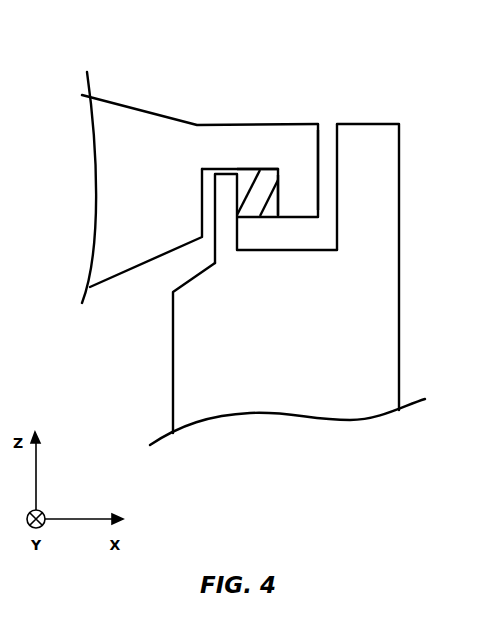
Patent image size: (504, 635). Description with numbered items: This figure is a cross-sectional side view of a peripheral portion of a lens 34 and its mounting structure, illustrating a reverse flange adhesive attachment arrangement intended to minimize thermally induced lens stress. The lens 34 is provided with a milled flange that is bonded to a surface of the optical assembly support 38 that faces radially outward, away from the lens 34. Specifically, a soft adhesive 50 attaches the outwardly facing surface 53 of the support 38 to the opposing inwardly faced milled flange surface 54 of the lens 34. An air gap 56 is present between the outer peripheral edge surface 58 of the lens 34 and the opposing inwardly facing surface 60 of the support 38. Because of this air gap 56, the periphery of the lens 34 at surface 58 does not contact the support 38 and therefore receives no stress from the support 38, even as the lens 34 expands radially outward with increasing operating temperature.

The lens 34 is at (131, 115).
The optical assembly support 38 is at (347, 408).
The adhesive 50 is at (243, 182).
The outwardly facing surface 53 is at (237, 233).
The milled flange surface 54 is at (278, 206).
The air gap 56 is at (327, 145).
The outer peripheral edge surface 58 is at (320, 188).
The inwardly facing surface 60 is at (333, 159).